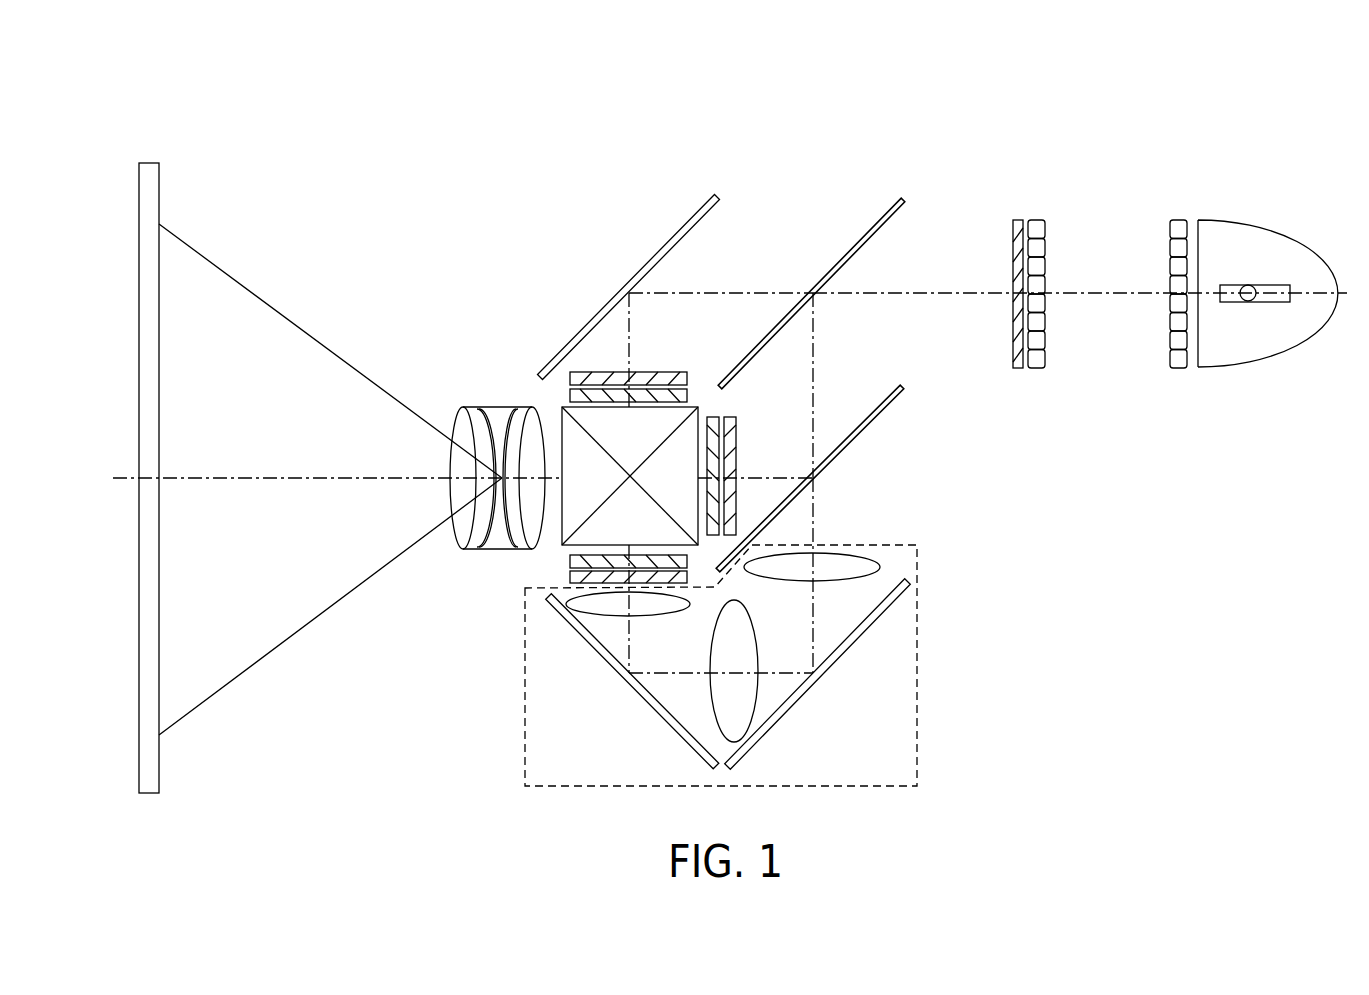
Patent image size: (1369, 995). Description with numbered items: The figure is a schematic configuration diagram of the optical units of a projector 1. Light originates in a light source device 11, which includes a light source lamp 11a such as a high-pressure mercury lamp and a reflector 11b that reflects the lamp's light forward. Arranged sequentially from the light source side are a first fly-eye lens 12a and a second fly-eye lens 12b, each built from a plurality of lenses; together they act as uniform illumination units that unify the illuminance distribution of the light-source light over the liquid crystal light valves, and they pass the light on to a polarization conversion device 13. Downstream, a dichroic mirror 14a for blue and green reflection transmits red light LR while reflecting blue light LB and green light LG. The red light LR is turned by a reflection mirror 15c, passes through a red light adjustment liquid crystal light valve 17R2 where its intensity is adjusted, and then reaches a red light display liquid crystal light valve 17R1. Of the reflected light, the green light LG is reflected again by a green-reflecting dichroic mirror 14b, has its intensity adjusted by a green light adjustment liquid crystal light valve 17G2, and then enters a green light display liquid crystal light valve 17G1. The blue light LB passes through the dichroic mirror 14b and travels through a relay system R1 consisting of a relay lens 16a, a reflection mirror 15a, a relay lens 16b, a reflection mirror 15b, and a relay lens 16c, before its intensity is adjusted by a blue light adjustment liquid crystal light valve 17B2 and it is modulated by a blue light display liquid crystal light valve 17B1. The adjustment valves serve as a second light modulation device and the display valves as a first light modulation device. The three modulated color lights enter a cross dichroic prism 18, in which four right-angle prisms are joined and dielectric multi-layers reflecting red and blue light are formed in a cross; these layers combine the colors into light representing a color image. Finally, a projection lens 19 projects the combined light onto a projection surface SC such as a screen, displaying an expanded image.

The projector 1 is at (1268, 78).
The light source device 11 is at (1257, 213).
The light source lamp 11a is at (1248, 302).
The reflector 11b is at (1295, 347).
The first fly-eye lens 12a is at (1186, 210).
The second fly-eye lens 12b is at (1050, 210).
The polarization conversion device 13 is at (1018, 218).
The dichroic mirror 14a is at (885, 216).
The dichroic mirror 14b is at (845, 448).
The reflection mirror 15a is at (900, 595).
The reflection mirror 15b is at (560, 610).
The reflection mirror 15c is at (600, 308).
The relay lens 16a is at (885, 567).
The relay lens 16b is at (758, 718).
The relay lens 16c is at (600, 614).
The red light display liquid crystal light valve 17R1 is at (570, 395).
The red light adjustment liquid crystal light valve 17R2 is at (570, 376).
The green light display liquid crystal light valve 17G1 is at (716, 416).
The green light adjustment liquid crystal light valve 17G2 is at (775, 448).
The blue light display liquid crystal light valve 17B1 is at (570, 561).
The blue light adjustment liquid crystal light valve 17B2 is at (570, 578).
The cross dichroic prism 18 is at (572, 504).
The projection lens 19 is at (547, 407).
The relay system R1 is at (893, 545).
The red light LR is at (712, 292).
The green light LG is at (813, 380).
The blue light LB is at (813, 530).
The projection surface SC is at (161, 760).